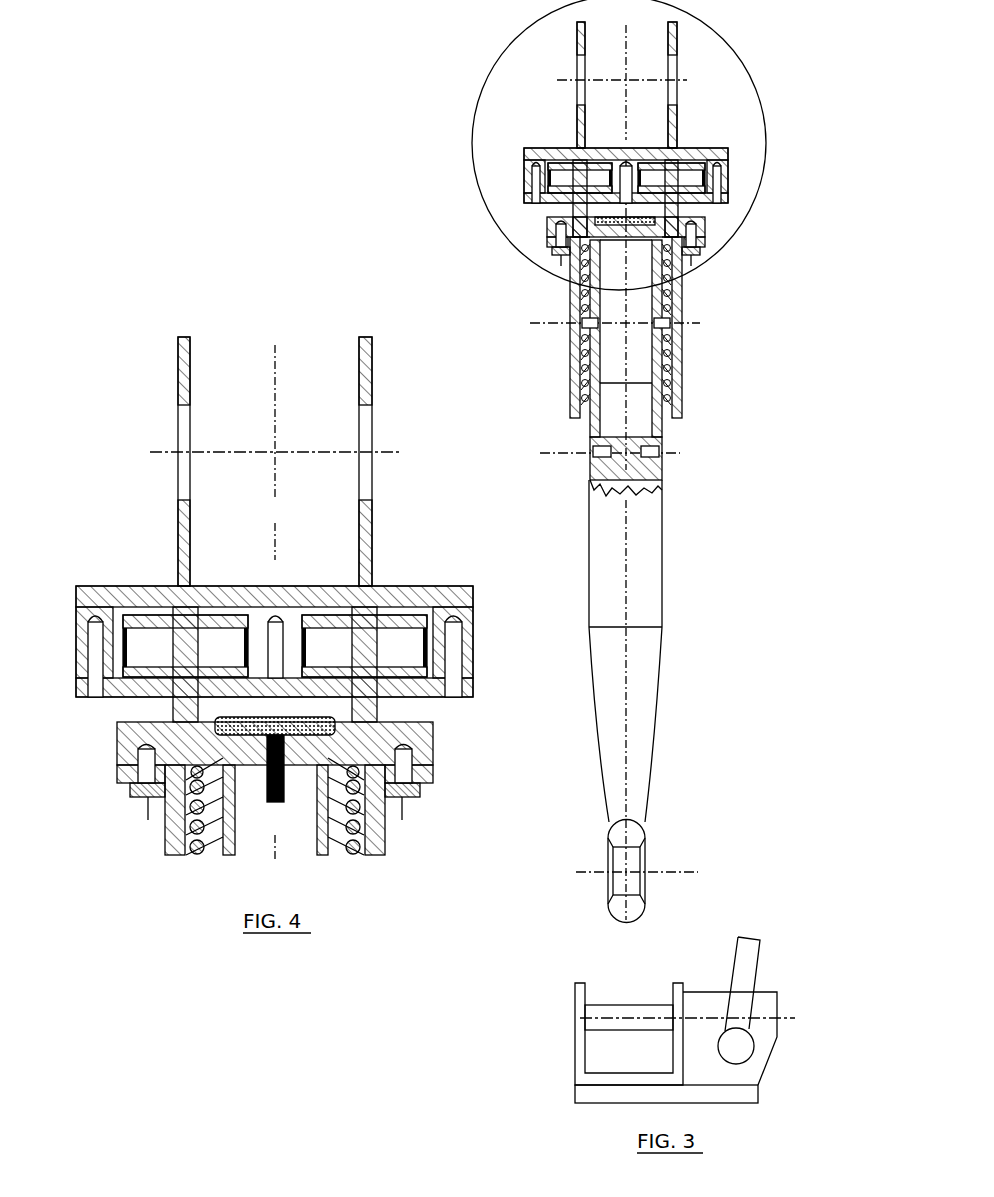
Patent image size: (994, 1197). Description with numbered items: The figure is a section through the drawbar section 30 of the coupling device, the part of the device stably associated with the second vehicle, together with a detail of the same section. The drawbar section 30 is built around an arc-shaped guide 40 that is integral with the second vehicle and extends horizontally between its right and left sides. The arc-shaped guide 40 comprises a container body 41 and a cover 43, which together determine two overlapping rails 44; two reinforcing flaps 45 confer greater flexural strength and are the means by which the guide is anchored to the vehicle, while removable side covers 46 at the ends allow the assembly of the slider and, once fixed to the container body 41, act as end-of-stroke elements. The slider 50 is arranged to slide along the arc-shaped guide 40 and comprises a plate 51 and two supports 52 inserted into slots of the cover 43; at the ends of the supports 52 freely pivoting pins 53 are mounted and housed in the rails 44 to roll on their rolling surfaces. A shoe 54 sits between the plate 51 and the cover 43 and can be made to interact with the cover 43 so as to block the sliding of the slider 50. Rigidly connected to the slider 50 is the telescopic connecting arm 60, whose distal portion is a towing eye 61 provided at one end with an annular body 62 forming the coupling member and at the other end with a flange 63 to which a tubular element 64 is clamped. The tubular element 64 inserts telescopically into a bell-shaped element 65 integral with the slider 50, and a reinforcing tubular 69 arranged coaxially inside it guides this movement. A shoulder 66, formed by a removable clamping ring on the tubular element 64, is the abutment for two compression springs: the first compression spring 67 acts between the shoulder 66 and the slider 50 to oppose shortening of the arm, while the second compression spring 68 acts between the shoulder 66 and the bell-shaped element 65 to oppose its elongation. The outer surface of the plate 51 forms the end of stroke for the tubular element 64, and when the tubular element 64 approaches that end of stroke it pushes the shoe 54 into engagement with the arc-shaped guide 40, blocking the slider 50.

In FIG. 3, the drawbar section 30 is at (773, 515).
In FIG. 3, the arc-shaped guide 40 is at (760, 147).
In FIG. 4, the container body 41 is at (440, 603).
In FIG. 4, the cover 43 is at (430, 688).
In FIG. 4, the rails 44 is at (162, 610).
In FIG. 4, the reinforcing flaps 45 is at (361, 368).
In FIG. 3, the removable side covers 46 is at (513, 1070).
In FIG. 3, the slider 50 is at (747, 234).
In FIG. 4, the plate 51 is at (433, 750).
In FIG. 4, the supports 52 is at (183, 697).
In FIG. 4, the pins 53 is at (150, 653).
In FIG. 4, the shoe 54 is at (226, 736).
In FIG. 3, the telescopic connecting arm 60 is at (555, 527).
In FIG. 3, the towing eye 61 is at (650, 680).
In FIG. 3, the annular body 62 is at (675, 858).
In FIG. 3, the flange 63 is at (625, 462).
In FIG. 3, the tubular element 64 is at (657, 368).
In FIG. 3, the bell-shaped element 65 is at (677, 335).
In FIG. 3, the shoulder 66 is at (667, 310).
In FIG. 3, the first compression spring 67 is at (585, 283).
In FIG. 4, the first compression spring 67 is at (205, 815).
In FIG. 3, the second compression spring 68 is at (587, 377).
In FIG. 3, the reinforcing tubular 69 is at (652, 350).
In FIG. 4, the reinforcing tubular 69 is at (332, 842).